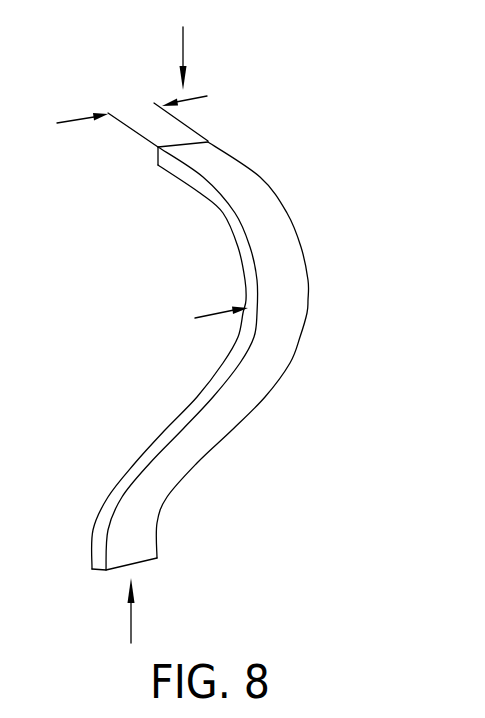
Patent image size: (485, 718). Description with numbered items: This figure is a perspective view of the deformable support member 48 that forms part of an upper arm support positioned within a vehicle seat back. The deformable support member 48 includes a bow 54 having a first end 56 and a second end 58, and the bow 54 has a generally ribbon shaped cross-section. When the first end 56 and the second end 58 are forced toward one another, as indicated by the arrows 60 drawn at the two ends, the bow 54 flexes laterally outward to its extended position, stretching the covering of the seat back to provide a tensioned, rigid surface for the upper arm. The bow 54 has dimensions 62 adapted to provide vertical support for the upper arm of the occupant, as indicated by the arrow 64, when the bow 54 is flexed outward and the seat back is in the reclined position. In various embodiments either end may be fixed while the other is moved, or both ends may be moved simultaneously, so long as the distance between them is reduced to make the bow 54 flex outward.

The deformable support member 48 is at (134, 382).
The bow 54 is at (322, 261).
The first end 56 is at (192, 148).
The second end 58 is at (133, 554).
The arrows 60 is at (183, 50).
The dimensions 62 is at (132, 121).
The arrow 64 is at (210, 312).